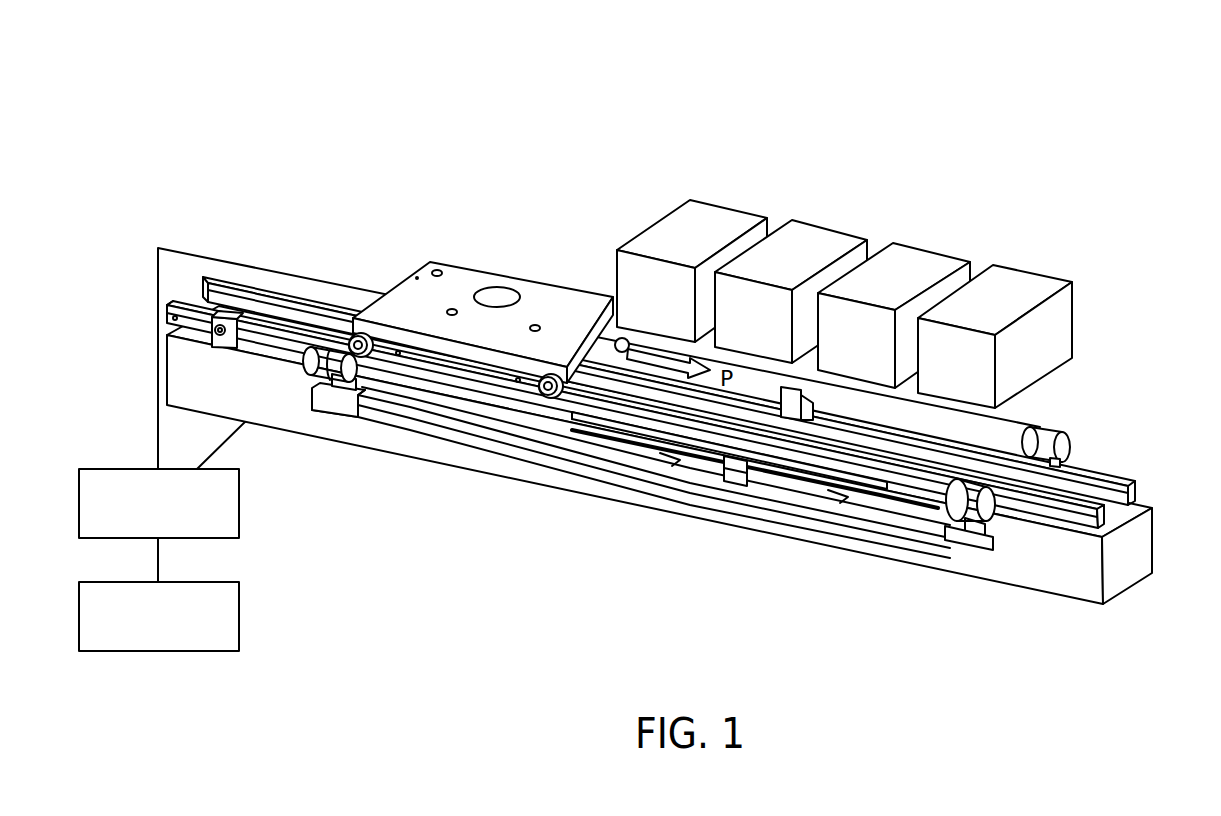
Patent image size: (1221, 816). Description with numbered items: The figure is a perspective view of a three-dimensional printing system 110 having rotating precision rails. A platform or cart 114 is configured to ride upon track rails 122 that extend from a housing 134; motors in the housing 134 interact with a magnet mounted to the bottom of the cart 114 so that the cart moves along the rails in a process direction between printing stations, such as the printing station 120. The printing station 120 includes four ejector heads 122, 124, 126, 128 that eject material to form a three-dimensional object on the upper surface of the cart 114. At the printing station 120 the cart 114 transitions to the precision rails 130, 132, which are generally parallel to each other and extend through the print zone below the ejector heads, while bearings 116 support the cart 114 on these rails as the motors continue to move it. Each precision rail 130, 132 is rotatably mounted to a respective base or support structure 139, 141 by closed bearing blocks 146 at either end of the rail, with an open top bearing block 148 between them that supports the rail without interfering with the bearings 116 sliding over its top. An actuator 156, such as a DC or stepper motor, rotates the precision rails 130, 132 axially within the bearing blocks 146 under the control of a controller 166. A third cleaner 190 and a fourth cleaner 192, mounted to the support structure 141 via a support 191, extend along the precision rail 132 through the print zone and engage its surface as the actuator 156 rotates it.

The three-dimensional printing system 110 is at (510, 108).
The platform or cart 114 is at (510, 275).
The bearings 116 is at (545, 392).
The printing station 120 is at (899, 258).
The track rails / ejector head 122 is at (760, 220).
The ejector head 124 is at (833, 238).
The ejector head 126 is at (962, 262).
The ejector head 128 is at (995, 306).
The precision rail 130 is at (1060, 432).
The precision rail 132 is at (887, 482).
The housing 134 is at (1128, 575).
The base or support structure 139 is at (1066, 462).
The base or support structure 141 is at (972, 538).
The bearing block 146 is at (347, 390).
The open top bearing block 148 is at (753, 468).
The actuator 156 is at (239, 505).
The controller 166 is at (239, 610).
The third cleaner 190 is at (712, 464).
The support 191 is at (670, 464).
The fourth cleaner 192 is at (630, 446).